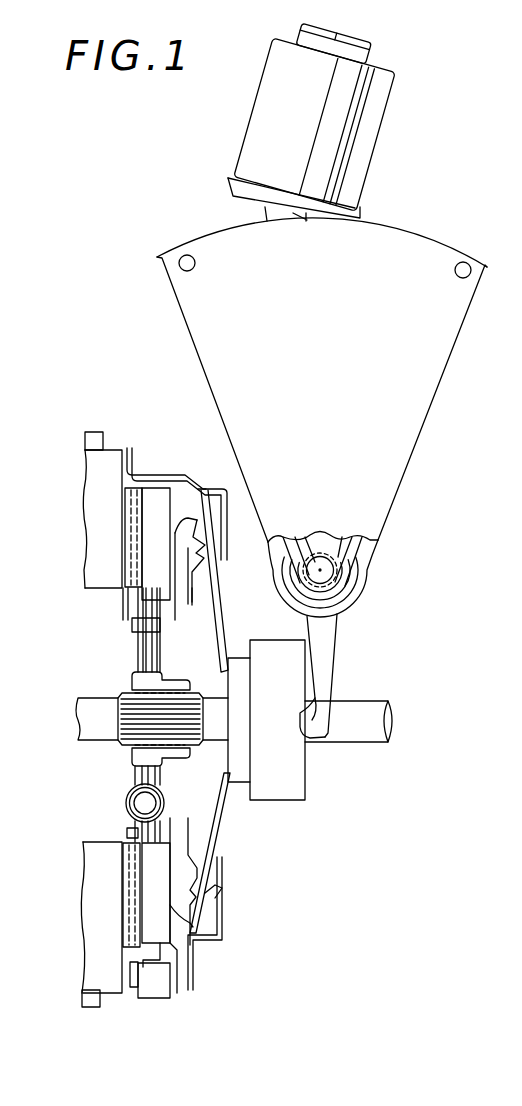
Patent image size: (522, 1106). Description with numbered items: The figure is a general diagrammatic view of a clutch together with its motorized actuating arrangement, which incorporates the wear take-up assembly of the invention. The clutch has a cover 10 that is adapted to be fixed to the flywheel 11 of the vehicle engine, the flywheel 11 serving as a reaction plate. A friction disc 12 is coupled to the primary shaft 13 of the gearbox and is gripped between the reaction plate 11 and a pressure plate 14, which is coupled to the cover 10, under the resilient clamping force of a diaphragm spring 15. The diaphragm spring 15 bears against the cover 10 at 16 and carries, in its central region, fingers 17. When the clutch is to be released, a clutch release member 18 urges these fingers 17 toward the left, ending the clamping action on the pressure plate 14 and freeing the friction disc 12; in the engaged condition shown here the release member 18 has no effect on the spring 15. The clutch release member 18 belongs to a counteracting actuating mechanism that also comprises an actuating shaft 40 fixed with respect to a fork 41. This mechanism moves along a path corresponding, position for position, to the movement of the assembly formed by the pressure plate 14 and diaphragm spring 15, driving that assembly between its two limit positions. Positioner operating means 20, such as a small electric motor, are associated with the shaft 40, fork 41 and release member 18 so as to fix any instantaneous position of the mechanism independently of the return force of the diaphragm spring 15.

The cover 10 is at (131, 709).
The flywheel 11 is at (92, 486).
The friction disc 12 is at (125, 538).
The primary shaft 13 is at (82, 703).
The pressure plate 14 is at (167, 493).
The diaphragm spring 15 is at (203, 488).
The bearing point 16 is at (203, 546).
The fingers 17 is at (221, 618).
The clutch release member 18 is at (277, 792).
The positioner operating means 20 is at (367, 138).
The actuating shaft 40 is at (323, 570).
The fork 41 is at (327, 680).